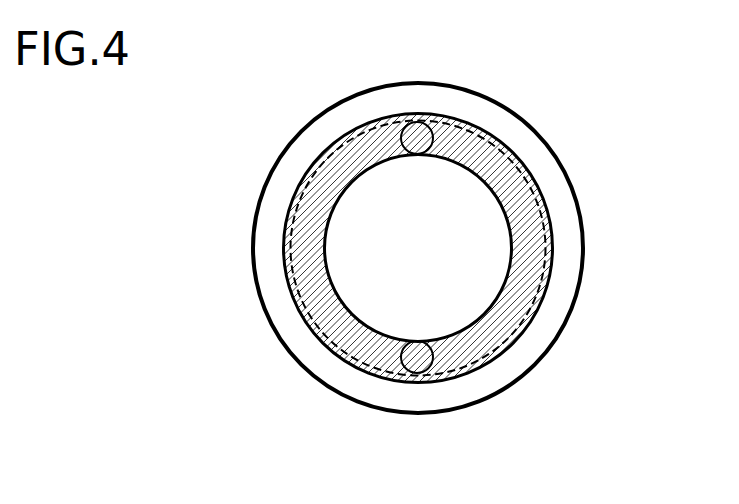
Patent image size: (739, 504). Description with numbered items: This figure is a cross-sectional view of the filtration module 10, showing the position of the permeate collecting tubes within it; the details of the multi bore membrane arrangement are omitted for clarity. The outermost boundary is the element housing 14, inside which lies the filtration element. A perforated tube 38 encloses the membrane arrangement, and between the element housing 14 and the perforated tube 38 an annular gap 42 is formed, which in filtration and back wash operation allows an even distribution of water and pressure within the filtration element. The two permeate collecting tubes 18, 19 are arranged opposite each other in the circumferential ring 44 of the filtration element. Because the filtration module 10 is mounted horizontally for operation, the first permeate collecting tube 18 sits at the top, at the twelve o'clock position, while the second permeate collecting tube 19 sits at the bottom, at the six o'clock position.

The filtration module 10 is at (512, 80).
The element housing 14 is at (550, 272).
The first permeate collecting tube 18 is at (433, 140).
The second permeate collecting tube 19 is at (431, 361).
The perforated tube 38 is at (520, 327).
The annular gap 42 is at (551, 228).
The circumferential ring 44 is at (303, 237).